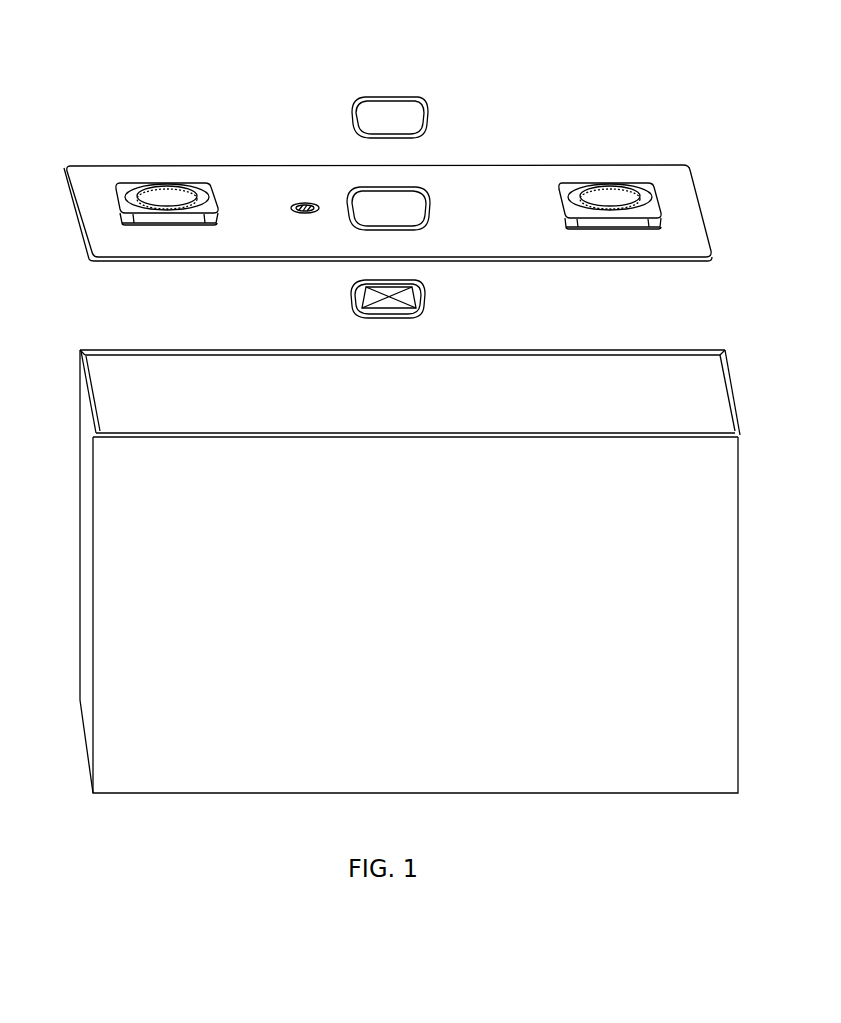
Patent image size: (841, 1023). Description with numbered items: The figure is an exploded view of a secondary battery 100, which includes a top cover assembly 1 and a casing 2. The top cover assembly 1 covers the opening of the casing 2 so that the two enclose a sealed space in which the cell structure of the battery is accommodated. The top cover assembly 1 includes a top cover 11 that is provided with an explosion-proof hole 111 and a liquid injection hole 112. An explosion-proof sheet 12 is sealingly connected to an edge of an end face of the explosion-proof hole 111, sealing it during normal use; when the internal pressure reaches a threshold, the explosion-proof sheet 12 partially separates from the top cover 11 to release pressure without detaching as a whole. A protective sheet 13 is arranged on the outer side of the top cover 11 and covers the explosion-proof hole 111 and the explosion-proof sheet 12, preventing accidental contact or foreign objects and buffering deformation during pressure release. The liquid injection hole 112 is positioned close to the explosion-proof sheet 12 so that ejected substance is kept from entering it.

The secondary battery 100 is at (104, 34).
The top cover assembly 1 is at (77, 126).
The top cover 11 is at (78, 172).
The explosion-proof hole 111 is at (385, 207).
The liquid injection hole 112 is at (300, 200).
The explosion-proof sheet 12 is at (355, 290).
The protective sheet 13 is at (357, 105).
The casing 2 is at (77, 373).